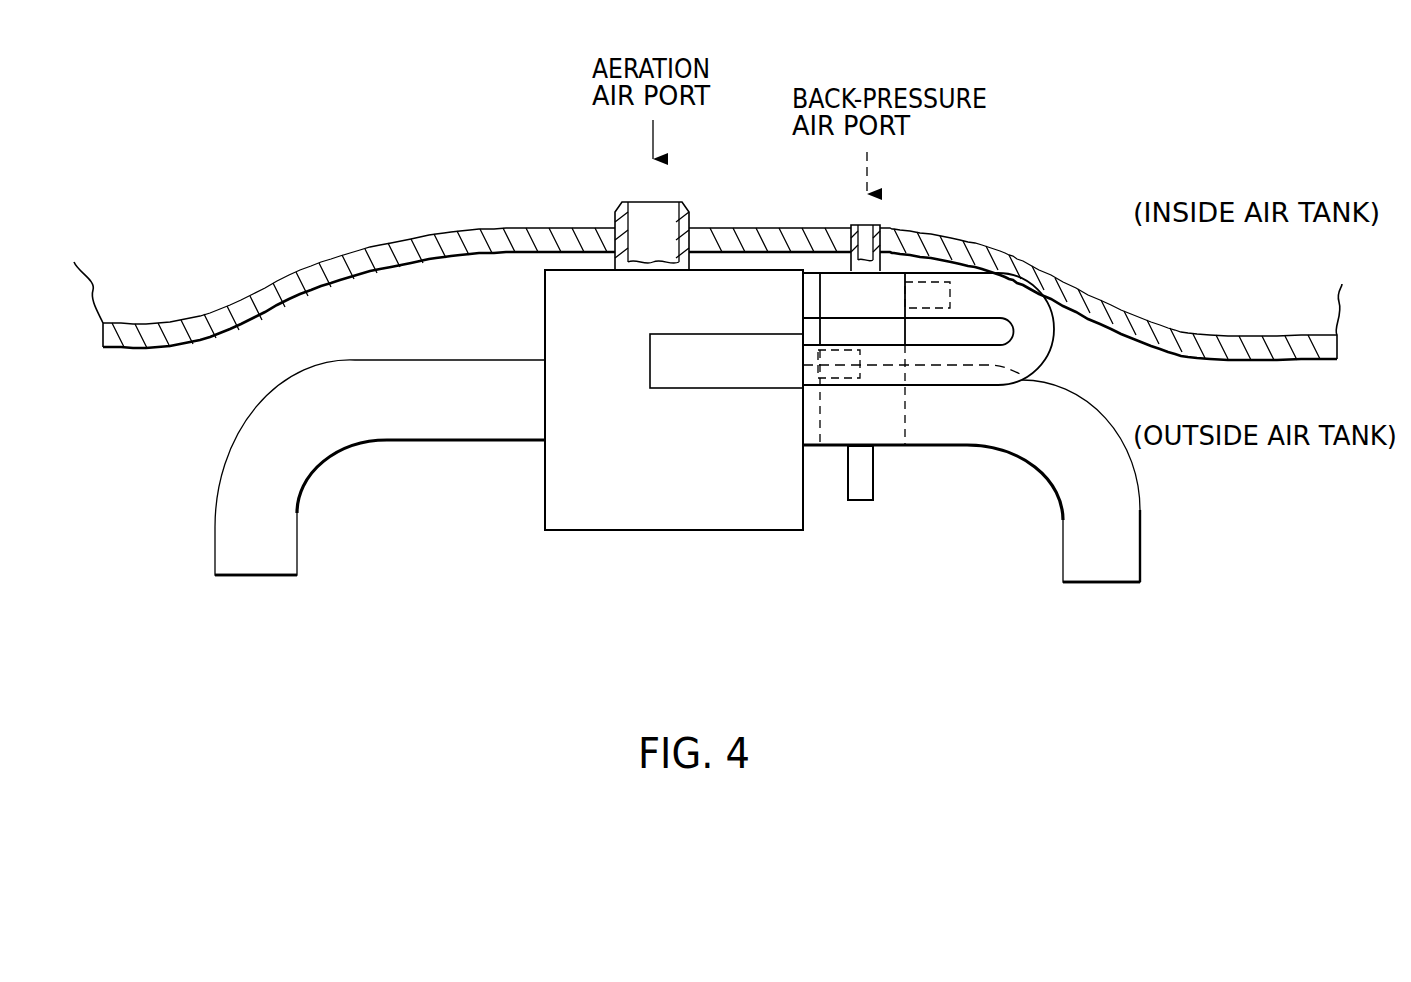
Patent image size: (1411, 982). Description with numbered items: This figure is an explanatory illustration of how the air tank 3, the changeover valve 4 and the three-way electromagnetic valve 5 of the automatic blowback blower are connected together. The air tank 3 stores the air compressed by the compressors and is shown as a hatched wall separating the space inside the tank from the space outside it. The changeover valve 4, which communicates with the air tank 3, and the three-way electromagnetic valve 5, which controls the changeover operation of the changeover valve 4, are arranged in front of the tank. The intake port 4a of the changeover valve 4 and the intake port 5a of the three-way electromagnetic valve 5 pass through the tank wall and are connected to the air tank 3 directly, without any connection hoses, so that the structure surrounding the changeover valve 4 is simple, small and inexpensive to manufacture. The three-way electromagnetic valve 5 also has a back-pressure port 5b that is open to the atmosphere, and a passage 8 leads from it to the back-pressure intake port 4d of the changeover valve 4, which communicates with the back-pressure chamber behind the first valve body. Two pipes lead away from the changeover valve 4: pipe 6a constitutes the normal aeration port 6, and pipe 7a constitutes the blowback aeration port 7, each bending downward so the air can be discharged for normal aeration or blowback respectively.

The air tank 3 is at (1205, 336).
The changeover valve 4 is at (683, 531).
The intake port 4a is at (690, 214).
The back-pressure intake port 4d is at (833, 388).
The three-way electromagnetic valve 5 is at (905, 418).
The intake port 5a is at (880, 226).
The back-pressure port 5b is at (862, 543).
The normal aeration port 6 is at (1105, 627).
The pipe 6a is at (1131, 506).
The blowback aeration port 7 is at (253, 622).
The pipe 7a is at (383, 373).
The back-pressure tube 8 is at (1042, 350).